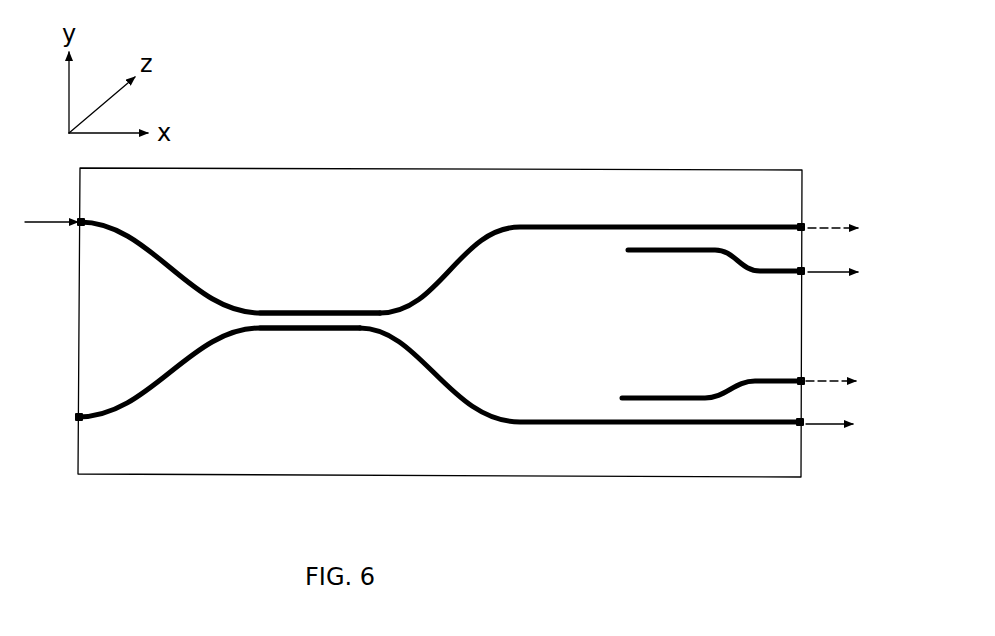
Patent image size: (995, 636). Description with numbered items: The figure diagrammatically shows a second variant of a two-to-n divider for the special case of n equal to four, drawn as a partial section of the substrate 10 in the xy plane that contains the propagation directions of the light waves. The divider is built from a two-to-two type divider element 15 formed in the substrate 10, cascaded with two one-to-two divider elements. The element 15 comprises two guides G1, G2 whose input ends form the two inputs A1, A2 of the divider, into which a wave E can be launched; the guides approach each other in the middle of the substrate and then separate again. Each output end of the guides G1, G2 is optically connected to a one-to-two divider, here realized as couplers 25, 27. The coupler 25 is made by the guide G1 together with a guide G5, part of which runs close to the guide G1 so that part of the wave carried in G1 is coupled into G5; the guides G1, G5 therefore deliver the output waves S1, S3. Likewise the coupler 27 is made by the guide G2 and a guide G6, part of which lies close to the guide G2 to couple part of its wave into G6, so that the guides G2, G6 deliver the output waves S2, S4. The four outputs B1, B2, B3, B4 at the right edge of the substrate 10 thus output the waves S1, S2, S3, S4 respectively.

The substrate 10 is at (340, 186).
The 2 to 2 type divider element 15 is at (340, 285).
The coupler 25 is at (671, 217).
The coupler 27 is at (680, 428).
The guide G1 is at (168, 258).
The guide G2 is at (163, 378).
The guide G5 is at (715, 260).
The guide G6 is at (708, 396).
The input A1 is at (83, 225).
The input A2 is at (79, 420).
The output B1 is at (801, 226).
The output B2 is at (798, 426).
The output B3 is at (800, 273).
The output B4 is at (798, 380).
The wave E is at (51, 207).
The output wave S1 is at (835, 213).
The output wave S2 is at (832, 442).
The output wave S3 is at (834, 291).
The output wave S4 is at (833, 364).